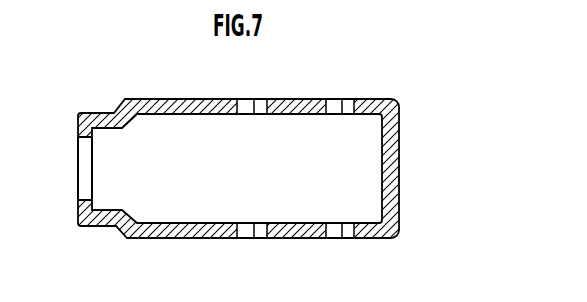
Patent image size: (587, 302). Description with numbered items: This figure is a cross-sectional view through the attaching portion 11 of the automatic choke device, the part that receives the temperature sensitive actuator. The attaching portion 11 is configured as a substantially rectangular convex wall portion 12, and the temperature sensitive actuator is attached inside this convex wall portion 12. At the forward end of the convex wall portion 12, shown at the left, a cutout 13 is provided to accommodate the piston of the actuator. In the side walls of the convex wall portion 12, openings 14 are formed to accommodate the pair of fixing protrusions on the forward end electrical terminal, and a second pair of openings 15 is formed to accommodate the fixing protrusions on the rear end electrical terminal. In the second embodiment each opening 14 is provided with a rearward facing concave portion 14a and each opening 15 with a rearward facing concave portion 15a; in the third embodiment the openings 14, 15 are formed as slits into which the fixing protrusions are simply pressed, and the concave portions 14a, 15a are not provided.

The attaching portion 11 is at (117, 86).
The convex wall portion 12 is at (192, 100).
The cutout 13 is at (82, 167).
The opening 14 is at (247, 101).
The concave portion 14a is at (263, 103).
The opening 15 is at (333, 101).
The concave portion 15a is at (348, 103).